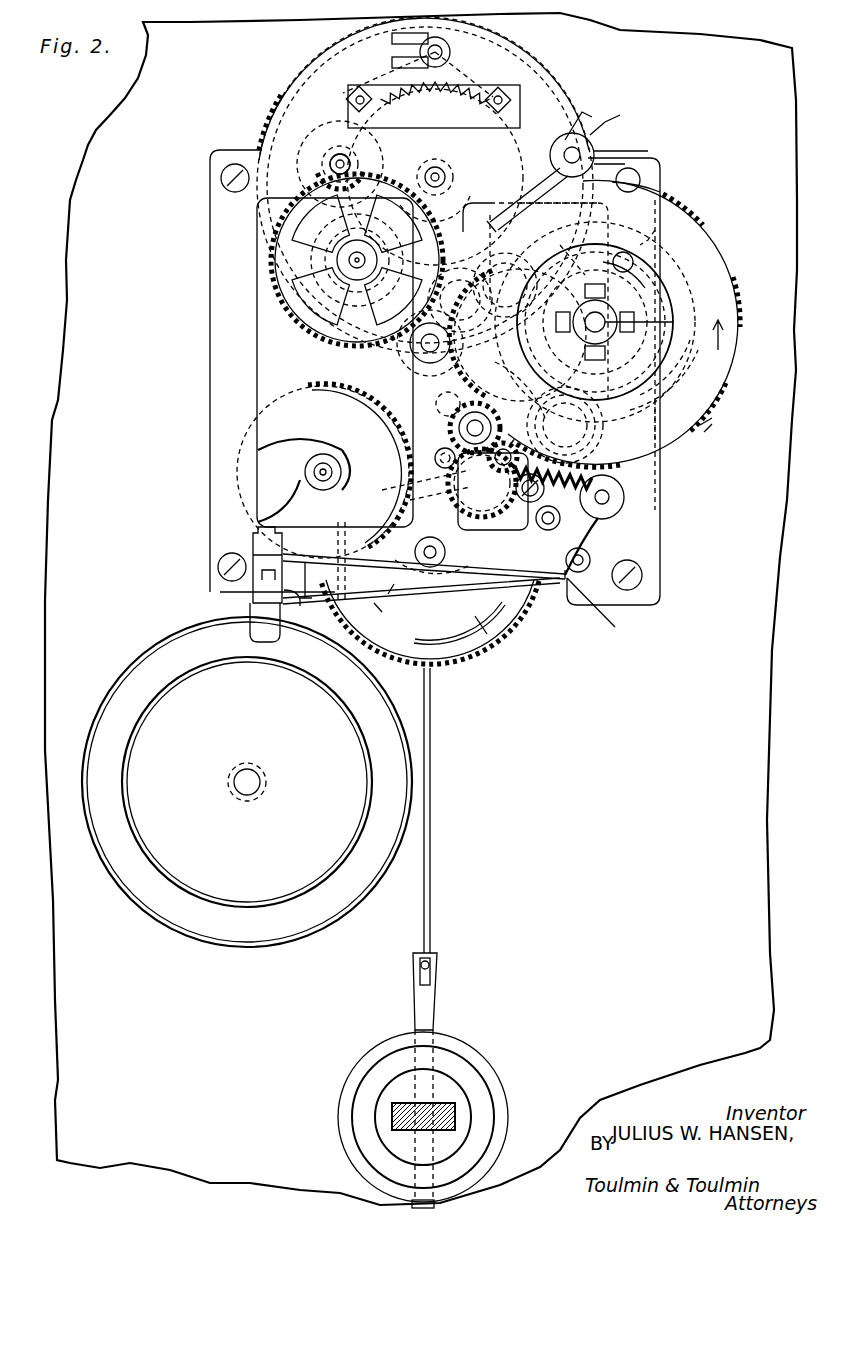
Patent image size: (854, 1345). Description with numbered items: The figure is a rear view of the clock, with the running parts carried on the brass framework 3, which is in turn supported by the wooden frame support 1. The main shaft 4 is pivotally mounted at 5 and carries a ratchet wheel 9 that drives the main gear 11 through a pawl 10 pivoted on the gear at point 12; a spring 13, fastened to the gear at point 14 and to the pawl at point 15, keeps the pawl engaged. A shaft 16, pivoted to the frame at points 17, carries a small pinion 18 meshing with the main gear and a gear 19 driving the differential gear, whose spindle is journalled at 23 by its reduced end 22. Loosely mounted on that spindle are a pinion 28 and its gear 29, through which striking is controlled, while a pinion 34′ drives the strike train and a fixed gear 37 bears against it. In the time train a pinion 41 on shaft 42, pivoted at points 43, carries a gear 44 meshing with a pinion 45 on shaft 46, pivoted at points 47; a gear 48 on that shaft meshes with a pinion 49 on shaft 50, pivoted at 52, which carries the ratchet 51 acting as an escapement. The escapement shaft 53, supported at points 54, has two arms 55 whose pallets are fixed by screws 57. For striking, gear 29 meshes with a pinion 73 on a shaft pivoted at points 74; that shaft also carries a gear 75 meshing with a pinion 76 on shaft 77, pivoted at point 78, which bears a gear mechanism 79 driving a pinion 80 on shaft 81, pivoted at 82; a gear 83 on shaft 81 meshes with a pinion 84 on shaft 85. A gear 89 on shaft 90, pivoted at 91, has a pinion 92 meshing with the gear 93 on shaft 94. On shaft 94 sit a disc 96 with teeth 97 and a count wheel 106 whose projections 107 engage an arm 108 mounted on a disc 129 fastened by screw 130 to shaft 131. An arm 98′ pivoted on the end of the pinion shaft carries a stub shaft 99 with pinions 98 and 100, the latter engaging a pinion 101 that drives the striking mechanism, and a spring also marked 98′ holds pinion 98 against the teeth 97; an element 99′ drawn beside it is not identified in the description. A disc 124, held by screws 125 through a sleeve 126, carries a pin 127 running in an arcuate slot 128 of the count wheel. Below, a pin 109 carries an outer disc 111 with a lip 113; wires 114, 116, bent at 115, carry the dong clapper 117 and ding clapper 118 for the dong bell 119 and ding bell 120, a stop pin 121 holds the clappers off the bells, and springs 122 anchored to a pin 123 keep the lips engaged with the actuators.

The wooden frame support 1 is at (85, 157).
The brass framework 3 is at (210, 358).
The main shaft 4 is at (421, 596).
The pivot mounting of main shaft 5 is at (452, 550).
The ratchet wheel 9 is at (387, 595).
The pawl 10 is at (380, 614).
The main gear 11 is at (490, 650).
The pawl pivot point 12 is at (356, 569).
The pawl spring 13 is at (440, 665).
The spring fastening point on main gear 14 is at (480, 620).
The spring fastening point on pawl 15 is at (318, 562).
The shaft 16 is at (330, 458).
The pivot points of shaft 17 is at (320, 455).
The small pinion 18 is at (306, 470).
The gear 19 is at (300, 402).
The reduced end of spindle 22 is at (405, 372).
The spindle journal 23 is at (412, 350).
The pinion 28 is at (452, 380).
The gear 29 is at (352, 348).
The pinion 34′ is at (462, 316).
The fixed gear 37 is at (570, 308).
The pinion 41 is at (352, 268).
The shaft 42 is at (340, 270).
The pivot points of shaft 43 is at (300, 338).
The gear 44 is at (330, 345).
The pinion 45 is at (318, 170).
The shaft 46 is at (340, 154).
The pivot points of shaft 47 is at (335, 160).
The gear 48 is at (266, 118).
The pinion 49 is at (455, 190).
The shaft 50 is at (443, 170).
The ratchet 51 is at (515, 160).
The pivot of ratchet shaft 52 is at (437, 168).
The escapement shaft 53 is at (448, 50).
The escapement shaft supports 54 is at (437, 44).
The escapement arms 55 is at (358, 100).
The screws 57 is at (357, 92).
The pinion 73 is at (480, 415).
The pivot points 74 is at (485, 422).
The gear 75 is at (482, 486).
The pinion 76 is at (510, 500).
The shaft 77 is at (516, 462).
The pivot point of shaft 78 is at (512, 456).
The gear mechanism 79 is at (446, 557).
The pinion 80 is at (588, 430).
The shaft 81 is at (596, 420).
The pivot of shaft 82 is at (586, 404).
The gear 83 is at (660, 416).
The pinion 84 is at (668, 372).
The shaft 85 is at (665, 388).
The gear 89 is at (560, 203).
The shaft 90 is at (528, 262).
The pivot of shaft 91 is at (576, 244).
The pinion 92 is at (507, 263).
The gear 93 is at (648, 282).
The shaft 94 is at (605, 322).
The disc 96 is at (712, 422).
The teeth 97 is at (710, 432).
The pinion 98 is at (565, 425).
The arm 98′ is at (443, 401).
The stub shaft 99 is at (530, 405).
The arm 99′ is at (417, 486).
The pinion 100 is at (518, 494).
The pinion 101 is at (445, 452).
The count wheel 106 is at (715, 268).
The projections 107 is at (665, 200).
The arm 108 is at (580, 120).
The pin or shaft 109 is at (612, 492).
The outer disc 111 is at (624, 500).
The lip 113 is at (610, 475).
The wire 114 is at (365, 552).
The bend 115 is at (616, 626).
The second wire 116 is at (305, 618).
The dong clapper 117 is at (255, 545).
The ding clapper 118 is at (252, 632).
The dong bell 119 is at (150, 652).
The ding bell 120 is at (130, 692).
The stop pin 121 is at (588, 556).
The spring 122 is at (602, 528).
The pin 123 is at (542, 528).
The disc 124 is at (662, 300).
The screws 125 is at (660, 314).
The sleeve 126 is at (606, 340).
The pin 127 is at (626, 252).
The slot 128 is at (667, 234).
The disc 129 is at (582, 142).
The screw 130 is at (612, 118).
The shaft 131 is at (605, 158).